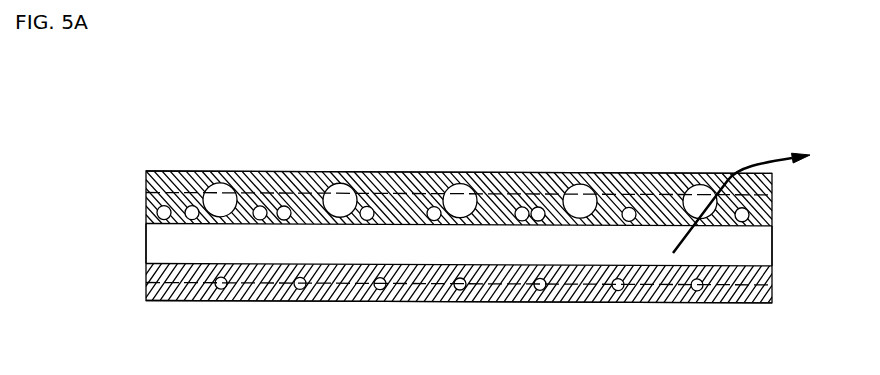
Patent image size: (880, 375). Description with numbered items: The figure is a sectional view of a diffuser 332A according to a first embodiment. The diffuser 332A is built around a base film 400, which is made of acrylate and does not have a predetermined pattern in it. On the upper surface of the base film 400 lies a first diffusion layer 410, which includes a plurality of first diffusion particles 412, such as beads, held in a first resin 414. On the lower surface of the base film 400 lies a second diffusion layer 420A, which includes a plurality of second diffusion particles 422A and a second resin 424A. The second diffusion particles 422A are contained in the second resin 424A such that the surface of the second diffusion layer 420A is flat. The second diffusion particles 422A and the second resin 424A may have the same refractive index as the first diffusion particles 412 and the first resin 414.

The diffuser 332A is at (210, 133).
The first diffusion layer 410 is at (136, 201).
The first diffusion particles 412 is at (580, 192).
The first resin 414 is at (771, 213).
The base film 400 is at (764, 246).
The second diffusion layer 420A is at (136, 284).
The second diffusion particles 422A is at (618, 287).
The second resin 424A is at (771, 297).